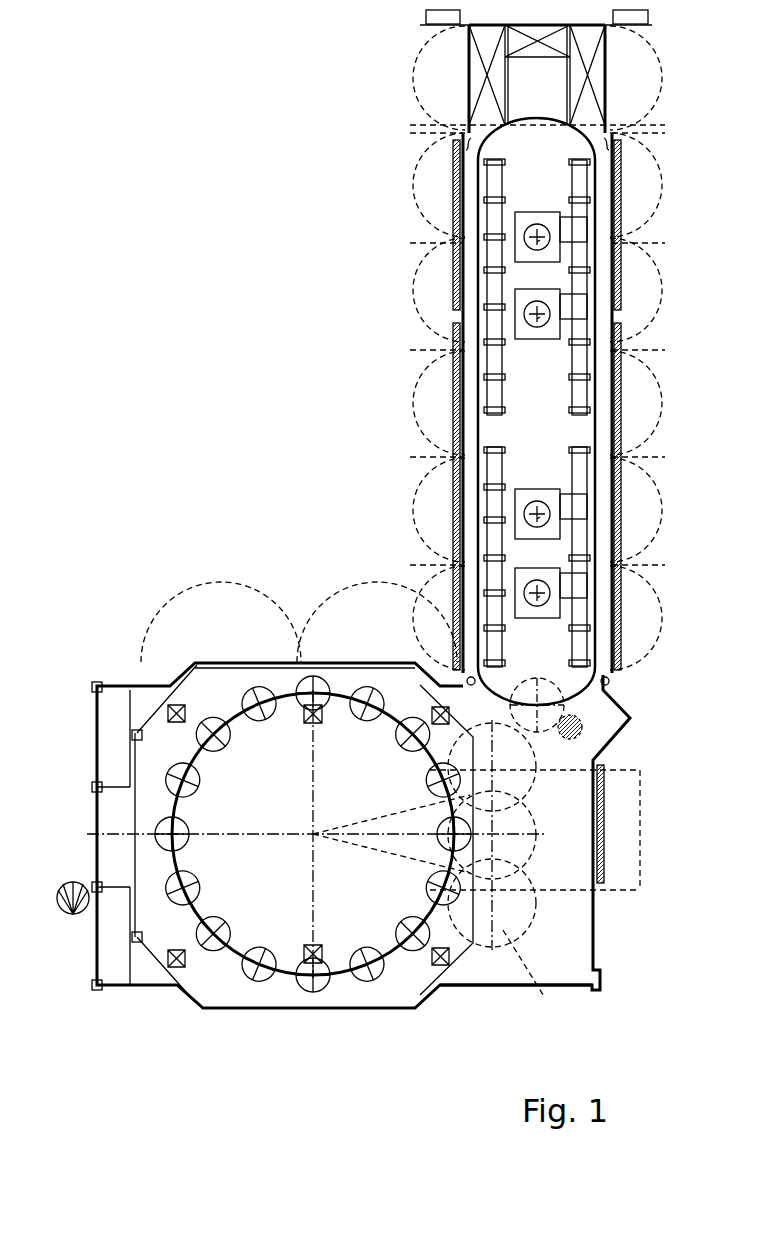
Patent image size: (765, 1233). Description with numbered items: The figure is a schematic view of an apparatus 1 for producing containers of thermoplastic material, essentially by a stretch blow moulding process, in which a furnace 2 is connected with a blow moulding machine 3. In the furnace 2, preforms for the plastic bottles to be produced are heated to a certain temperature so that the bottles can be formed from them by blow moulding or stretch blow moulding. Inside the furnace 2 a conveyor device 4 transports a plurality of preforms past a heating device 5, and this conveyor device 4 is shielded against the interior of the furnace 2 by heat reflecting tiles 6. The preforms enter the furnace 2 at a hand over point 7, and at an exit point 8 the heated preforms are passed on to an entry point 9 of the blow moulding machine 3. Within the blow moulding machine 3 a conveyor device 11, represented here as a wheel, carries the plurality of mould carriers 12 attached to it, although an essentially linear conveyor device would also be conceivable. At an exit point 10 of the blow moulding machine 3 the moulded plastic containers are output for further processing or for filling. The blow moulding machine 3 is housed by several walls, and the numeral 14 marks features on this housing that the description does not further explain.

The apparatus 1 is at (300, 404).
The frame 2 is at (548, 108).
The housing 3 is at (285, 683).
The heating element 4 is at (620, 276).
The outer wall 5 is at (470, 408).
The rack 6 is at (494, 217).
The hinge 7 is at (610, 716).
The fastener 8 is at (522, 705).
The opening 9 is at (505, 795).
The base plate 10 is at (545, 998).
The window 11 is at (270, 799).
The screws 12 is at (160, 833).
The fastening elements 14 is at (158, 683).